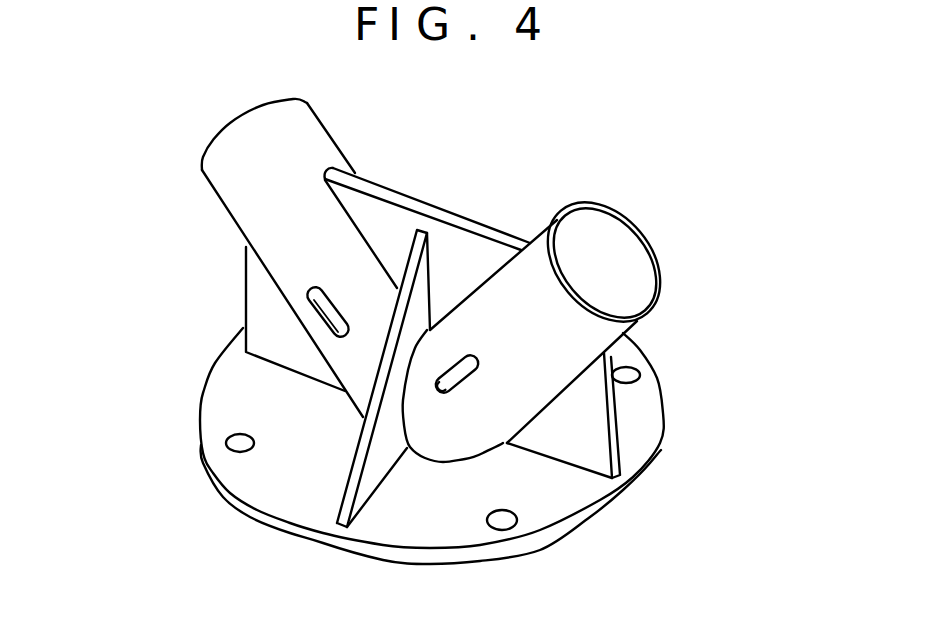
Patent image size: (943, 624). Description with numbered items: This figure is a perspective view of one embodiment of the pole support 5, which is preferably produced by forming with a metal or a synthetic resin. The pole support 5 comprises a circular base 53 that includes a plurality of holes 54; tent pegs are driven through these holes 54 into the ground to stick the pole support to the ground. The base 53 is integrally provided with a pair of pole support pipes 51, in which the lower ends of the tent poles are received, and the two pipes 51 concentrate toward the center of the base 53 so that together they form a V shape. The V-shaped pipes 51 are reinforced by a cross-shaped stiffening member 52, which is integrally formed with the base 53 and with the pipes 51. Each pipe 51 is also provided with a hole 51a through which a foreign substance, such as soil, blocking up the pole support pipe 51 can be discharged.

The pole support 5 is at (688, 387).
The pole support pipe 51 is at (231, 150).
The hole 51a is at (305, 296).
The cross-shaped stiffening member 52 is at (478, 226).
The circular base 53 is at (220, 375).
The holes 54 is at (230, 445).